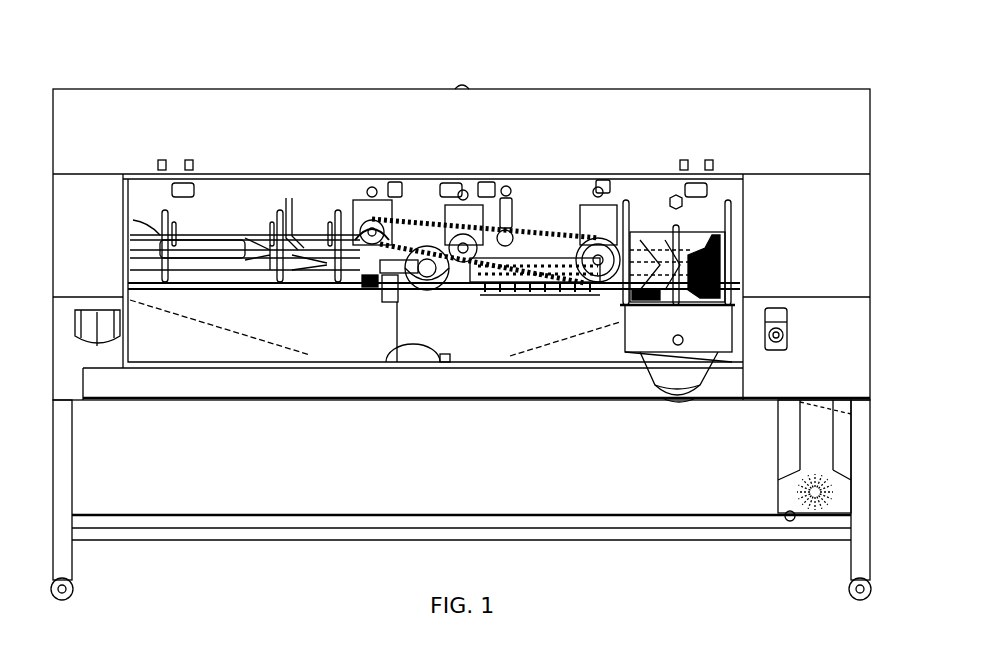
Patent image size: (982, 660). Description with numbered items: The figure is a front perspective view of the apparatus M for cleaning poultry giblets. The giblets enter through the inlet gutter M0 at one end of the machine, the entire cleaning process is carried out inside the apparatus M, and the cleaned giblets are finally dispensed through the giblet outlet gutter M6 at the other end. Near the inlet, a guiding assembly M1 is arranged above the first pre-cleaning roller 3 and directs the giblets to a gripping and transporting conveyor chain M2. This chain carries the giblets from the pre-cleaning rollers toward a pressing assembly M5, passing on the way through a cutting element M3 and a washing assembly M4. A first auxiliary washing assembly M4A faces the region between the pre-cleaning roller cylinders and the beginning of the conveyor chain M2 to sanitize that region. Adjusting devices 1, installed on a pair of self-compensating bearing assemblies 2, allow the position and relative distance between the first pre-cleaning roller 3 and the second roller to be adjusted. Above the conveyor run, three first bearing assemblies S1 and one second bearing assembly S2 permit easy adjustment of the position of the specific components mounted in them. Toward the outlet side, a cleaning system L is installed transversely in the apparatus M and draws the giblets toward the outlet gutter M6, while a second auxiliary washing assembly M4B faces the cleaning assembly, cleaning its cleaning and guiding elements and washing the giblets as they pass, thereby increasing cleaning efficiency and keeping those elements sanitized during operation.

The apparatus M is at (135, 70).
The inlet gutter M0 is at (101, 352).
The guiding assembly M1 is at (200, 272).
The gripping and transporting conveyor chain M2 is at (420, 228).
The cutting element M3 is at (437, 314).
The washing assembly M4 is at (532, 298).
The first auxiliary washing assembly M4A is at (290, 200).
The second auxiliary washing assembly M4B is at (680, 215).
The pressing assembly M5 is at (606, 225).
The giblet outlet gutter M6 is at (672, 388).
The first bearing assemblies S1 is at (380, 205).
The second bearing assembly S2 is at (508, 198).
The cleaning system L is at (720, 262).
The adjusting devices 1 is at (389, 308).
The self-compensating bearing assemblies 2 is at (400, 305).
The first pre-cleaning roller 3 is at (298, 290).